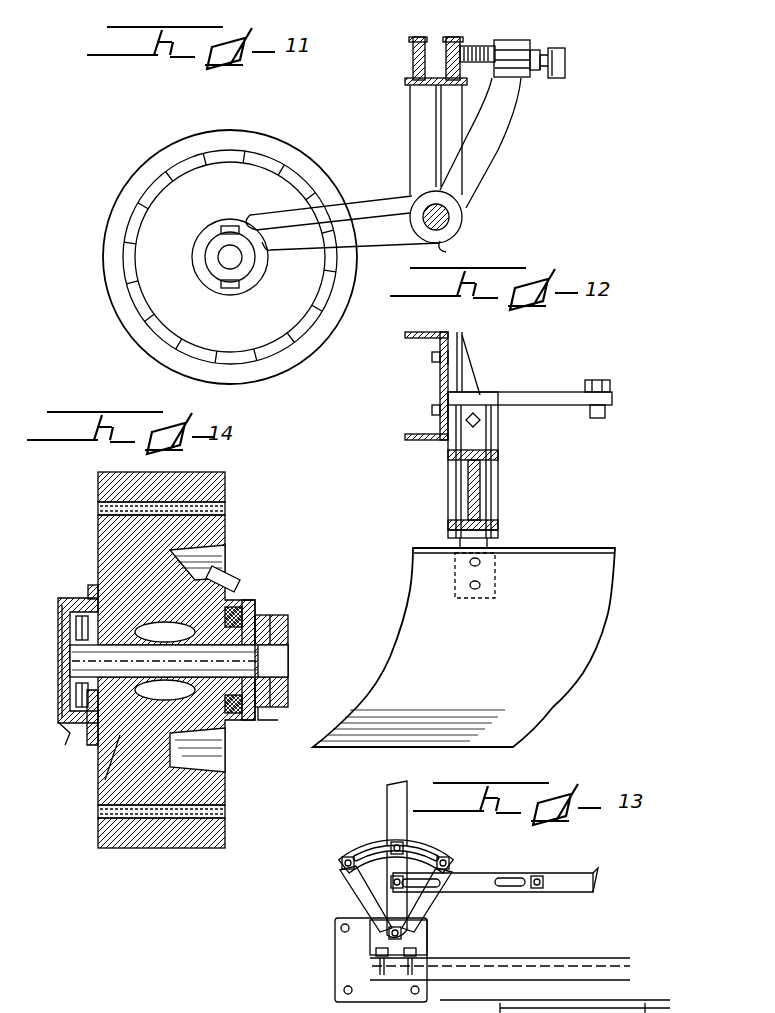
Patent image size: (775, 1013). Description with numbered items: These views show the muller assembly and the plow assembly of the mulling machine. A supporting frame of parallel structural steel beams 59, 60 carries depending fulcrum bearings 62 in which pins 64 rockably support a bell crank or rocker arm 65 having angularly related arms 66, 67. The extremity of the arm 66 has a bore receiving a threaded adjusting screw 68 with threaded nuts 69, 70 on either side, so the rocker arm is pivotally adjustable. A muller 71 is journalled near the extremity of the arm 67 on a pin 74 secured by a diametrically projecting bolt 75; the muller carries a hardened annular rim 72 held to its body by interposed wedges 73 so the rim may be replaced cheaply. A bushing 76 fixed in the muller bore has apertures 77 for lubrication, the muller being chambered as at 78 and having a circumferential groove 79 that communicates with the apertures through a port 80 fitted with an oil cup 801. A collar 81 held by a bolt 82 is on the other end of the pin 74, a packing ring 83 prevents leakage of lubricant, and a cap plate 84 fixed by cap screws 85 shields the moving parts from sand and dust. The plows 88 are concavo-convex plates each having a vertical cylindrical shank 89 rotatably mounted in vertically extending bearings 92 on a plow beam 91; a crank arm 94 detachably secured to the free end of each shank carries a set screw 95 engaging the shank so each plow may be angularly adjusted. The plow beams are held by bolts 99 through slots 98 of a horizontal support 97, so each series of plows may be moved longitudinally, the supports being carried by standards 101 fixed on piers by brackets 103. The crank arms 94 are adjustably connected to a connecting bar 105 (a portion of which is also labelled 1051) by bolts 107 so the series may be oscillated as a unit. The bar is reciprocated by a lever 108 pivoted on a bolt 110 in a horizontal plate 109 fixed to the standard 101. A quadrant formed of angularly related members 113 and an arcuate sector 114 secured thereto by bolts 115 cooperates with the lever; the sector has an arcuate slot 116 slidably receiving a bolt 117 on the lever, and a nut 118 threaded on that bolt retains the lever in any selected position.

In FIG. 11, the structural steel beam 59 is at (418, 48).
In FIG. 11, the structural steel beam 60 is at (462, 45).
In FIG. 11, the fulcrum bearing 62 is at (432, 128).
In FIG. 11, the pin 64 is at (445, 232).
In FIG. 11, the bell crank 65 is at (461, 251).
In FIG. 14, the bell crank 65 is at (75, 765).
In FIG. 11, the arm 66 is at (484, 160).
In FIG. 11, the arm 67 is at (387, 236).
In FIG. 11, the threaded adjusting screw 68 is at (537, 75).
In FIG. 11, the threaded nut 69 is at (545, 60).
In FIG. 11, the threaded nut 70 is at (497, 55).
In FIG. 11, the muller 71 is at (283, 315).
In FIG. 14, the muller 71 is at (210, 522).
In FIG. 11, the hardened annular rim 72 is at (325, 182).
In FIG. 14, the hardened annular rim 72 is at (225, 490).
In FIG. 11, the wedge 73 is at (218, 157).
In FIG. 14, the wedge 73 is at (108, 508).
In FIG. 11, the pin 74 is at (233, 265).
In FIG. 14, the pin 74 is at (280, 660).
In FIG. 11, the diametrically projecting bolt 75 is at (260, 168).
In FIG. 14, the diametrically projecting bolt 75 is at (275, 618).
In FIG. 14, the bushing 76 is at (62, 740).
In FIG. 14, the aperture 77 is at (280, 718).
In FIG. 14, the chamber 78 is at (100, 780).
In FIG. 14, the circumferential groove 79 is at (230, 540).
In FIG. 14, the port 80 is at (185, 600).
In FIG. 14, the oil cup 801 is at (240, 583).
In FIG. 14, the collar 81 is at (76, 626).
In FIG. 14, the bolt 82 is at (62, 603).
In FIG. 14, the packing ring 83 is at (250, 740).
In FIG. 14, the cap plate 84 is at (60, 655).
In FIG. 14, the cap screw 85 is at (90, 588).
In FIG. 12, the plow 88 is at (565, 635).
In FIG. 12, the cylindrical shank 89 is at (500, 545).
In FIG. 12, the plow beam 91 is at (480, 490).
In FIG. 12, the bearing 92 is at (499, 505).
In FIG. 12, the crank arm 94 is at (570, 388).
In FIG. 12, the set screw 95 is at (481, 420).
In FIG. 12, the horizontal support 97 is at (455, 350).
In FIG. 13, the horizontal support 97 is at (490, 968).
In FIG. 12, the slot 98 is at (460, 334).
In FIG. 12, the bolt 99 is at (470, 370).
In FIG. 13, the standard 101 is at (357, 958).
In FIG. 13, the bracket 103 is at (345, 990).
In FIG. 12, the bar 105 is at (610, 390).
In FIG. 13, the bar 105 is at (490, 860).
In FIG. 13, the link bar end 1051 is at (585, 892).
In FIG. 12, the bolt 107 is at (600, 418).
In FIG. 13, the bolt 107 is at (540, 876).
In FIG. 13, the lever 108 is at (386, 802).
In FIG. 13, the horizontal plate 109 is at (415, 935).
In FIG. 13, the bolt 110 is at (390, 932).
In FIG. 13, the angularly related member 113 is at (460, 906).
In FIG. 13, the arcuate sector 114 is at (345, 848).
In FIG. 13, the bolt 115 is at (342, 860).
In FIG. 13, the arcuate slot 116 is at (445, 858).
In FIG. 13, the bolt 117 is at (404, 880).
In FIG. 13, the nut 118 is at (392, 845).